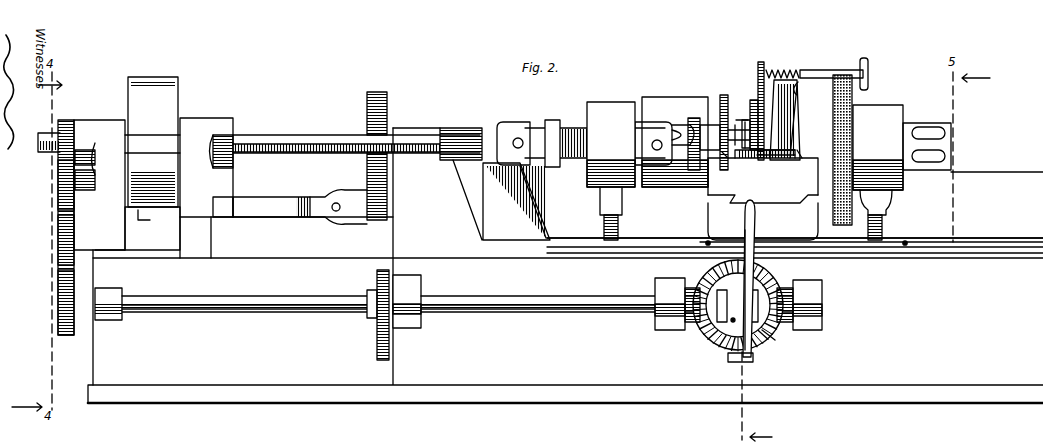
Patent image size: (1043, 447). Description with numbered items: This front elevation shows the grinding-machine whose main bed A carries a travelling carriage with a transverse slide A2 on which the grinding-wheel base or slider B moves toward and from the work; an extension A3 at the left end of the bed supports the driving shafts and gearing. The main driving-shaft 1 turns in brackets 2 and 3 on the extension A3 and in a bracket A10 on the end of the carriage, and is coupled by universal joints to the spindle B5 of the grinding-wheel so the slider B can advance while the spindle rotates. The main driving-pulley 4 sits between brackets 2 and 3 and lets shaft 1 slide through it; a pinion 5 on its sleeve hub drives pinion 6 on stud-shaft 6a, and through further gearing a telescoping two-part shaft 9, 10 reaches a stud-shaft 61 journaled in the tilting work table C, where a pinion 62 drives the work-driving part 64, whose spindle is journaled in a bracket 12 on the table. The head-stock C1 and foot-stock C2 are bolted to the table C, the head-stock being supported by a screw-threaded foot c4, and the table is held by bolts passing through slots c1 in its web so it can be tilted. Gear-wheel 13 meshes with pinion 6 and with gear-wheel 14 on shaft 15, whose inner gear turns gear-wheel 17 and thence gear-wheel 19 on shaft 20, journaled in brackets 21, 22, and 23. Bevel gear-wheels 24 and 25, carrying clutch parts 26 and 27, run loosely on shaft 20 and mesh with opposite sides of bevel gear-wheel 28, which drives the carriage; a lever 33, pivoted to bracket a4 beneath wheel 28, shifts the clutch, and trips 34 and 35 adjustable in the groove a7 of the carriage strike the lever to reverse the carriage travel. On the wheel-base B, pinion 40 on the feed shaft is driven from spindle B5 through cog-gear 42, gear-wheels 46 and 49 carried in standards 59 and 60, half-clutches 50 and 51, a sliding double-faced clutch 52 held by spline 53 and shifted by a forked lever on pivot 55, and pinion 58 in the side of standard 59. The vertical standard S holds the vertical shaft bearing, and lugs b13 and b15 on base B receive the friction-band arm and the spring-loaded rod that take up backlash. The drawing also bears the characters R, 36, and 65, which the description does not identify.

The main driving-shaft 1 is at (289, 136).
The bracket 2 is at (204, 118).
The bracket 3 is at (95, 122).
The main driving-pulley 4 is at (152, 163).
The pinion 5 is at (66, 120).
The pinion 6 is at (60, 186).
The stud-shaft 6a is at (88, 192).
The two-part shaft 9 is at (225, 200).
The two-part shaft 10 is at (262, 198).
The bracket 12 is at (433, 163).
The gear-wheel 13 is at (62, 234).
The gear-wheel 14 is at (62, 288).
The shaft 15 is at (242, 298).
The gear-wheel 17 is at (378, 341).
The gear-wheel 19 is at (374, 281).
The shaft 20 is at (500, 298).
The bracket 21 is at (410, 294).
The bracket 22 is at (663, 296).
The bracket 23 is at (813, 303).
The bevel gear-wheel 24 is at (693, 320).
The bevel gear-wheel 25 is at (784, 320).
The clutch part 26 is at (732, 322).
The clutch part 27 is at (766, 340).
The bevel gear-wheel 28 is at (776, 273).
The lever 33 is at (752, 222).
The trip 34 is at (905, 240).
The trip 35 is at (795, 96).
The handle 36 is at (869, 71).
The pinion 40 is at (759, 70).
The cog-gear 42 is at (690, 144).
The gear-wheel 46 is at (721, 100).
The gear-wheel 49 is at (754, 100).
The half-clutch 50 is at (738, 142).
The half-clutch 51 is at (749, 140).
The sliding double-faced clutch 52 is at (748, 118).
The spline 53 is at (788, 69).
The vertical pivot 55 is at (705, 242).
The pinion 58 is at (757, 72).
The standard 59 is at (795, 124).
The standard 60 is at (710, 137).
The stud-shaft 61 is at (352, 190).
The pinion 62 is at (375, 222).
The work-driving part 64 is at (552, 122).
The gear 65 is at (388, 113).
The main bed A is at (565, 265).
The transverse slide A2 is at (763, 215).
The extension A3 is at (172, 317).
The bracket A10 is at (391, 184).
The grinding-wheel base B is at (763, 172).
The grinding-wheel spindle B5 is at (700, 128).
The lug b13 is at (796, 164).
The lug b15 is at (727, 165).
The work table C is at (975, 171).
The head-stock C1 is at (616, 102).
The foot-stock C2 is at (885, 105).
The slot c1 is at (884, 226).
The screw-threaded foot c4 is at (620, 230).
The rest R is at (671, 100).
The vertical standard S is at (790, 115).
The bracket a4 is at (728, 360).
The longitudinal groove a7 is at (985, 254).